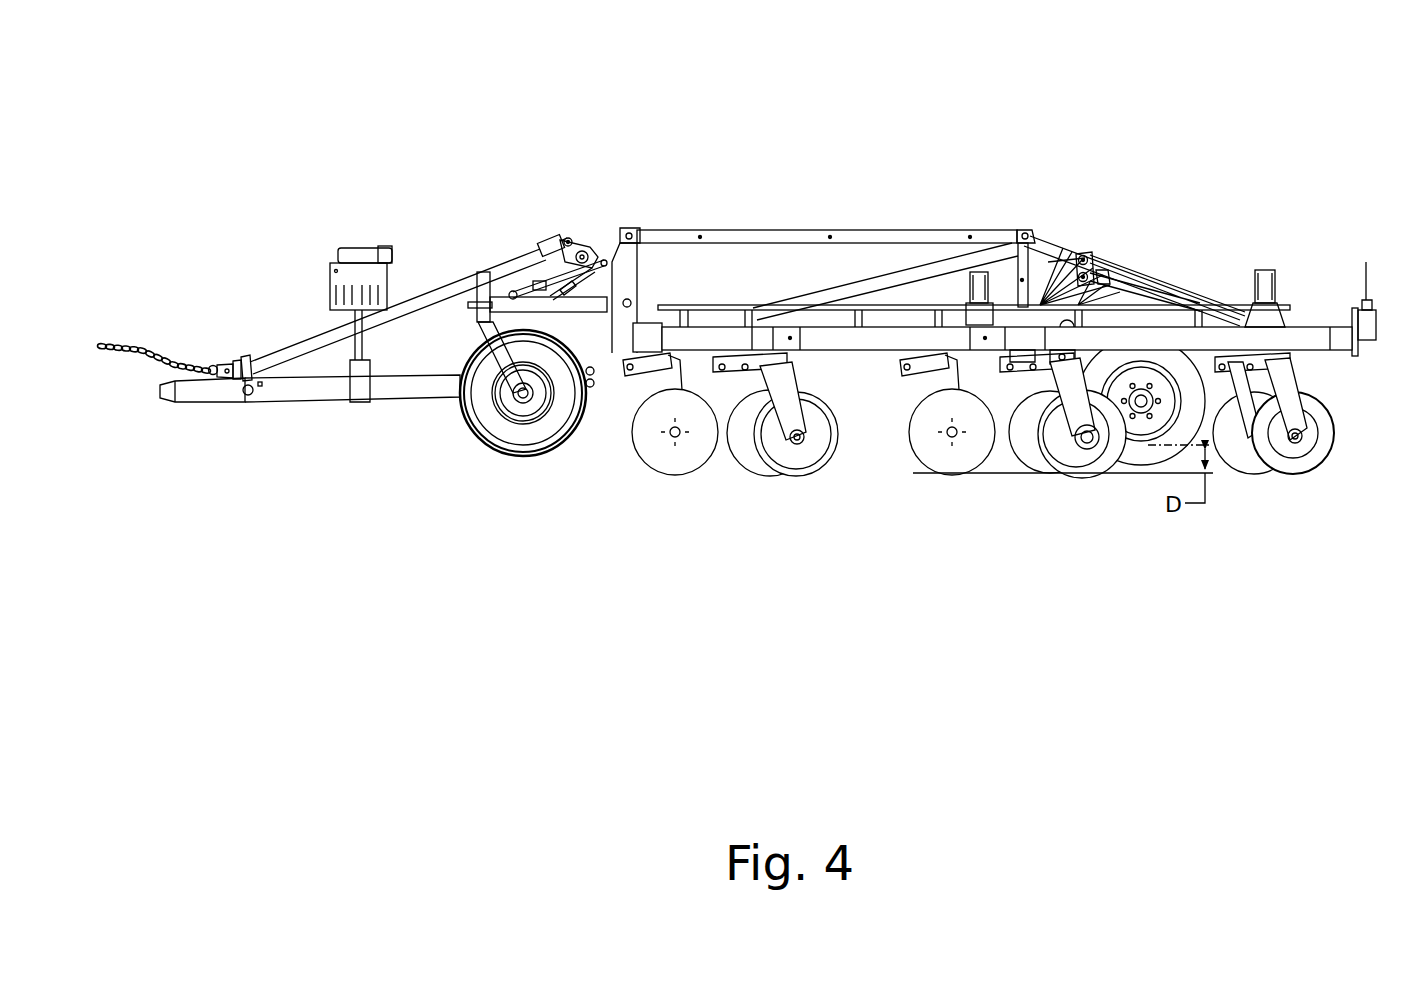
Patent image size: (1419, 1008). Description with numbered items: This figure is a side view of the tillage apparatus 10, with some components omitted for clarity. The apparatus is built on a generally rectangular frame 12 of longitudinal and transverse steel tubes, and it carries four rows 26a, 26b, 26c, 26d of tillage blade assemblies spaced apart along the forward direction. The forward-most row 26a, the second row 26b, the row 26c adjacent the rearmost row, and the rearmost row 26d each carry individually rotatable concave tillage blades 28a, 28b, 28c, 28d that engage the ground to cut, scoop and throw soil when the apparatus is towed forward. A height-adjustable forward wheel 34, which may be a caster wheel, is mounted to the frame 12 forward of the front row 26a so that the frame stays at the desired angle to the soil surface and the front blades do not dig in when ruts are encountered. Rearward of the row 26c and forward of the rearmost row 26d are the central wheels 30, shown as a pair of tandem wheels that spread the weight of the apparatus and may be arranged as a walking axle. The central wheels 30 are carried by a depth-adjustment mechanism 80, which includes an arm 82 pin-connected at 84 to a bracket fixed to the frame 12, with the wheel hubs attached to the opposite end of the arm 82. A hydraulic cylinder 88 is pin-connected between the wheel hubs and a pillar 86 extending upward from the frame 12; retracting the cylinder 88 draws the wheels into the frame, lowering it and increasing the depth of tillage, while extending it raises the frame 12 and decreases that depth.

The tillage apparatus 10 is at (407, 155).
The frame 12 is at (867, 352).
The forward-most row of tillage blade assemblies 26a is at (626, 477).
The second row of tillage blade assemblies 26b is at (801, 477).
The row of tillage blade assemblies adjacent the rearmost row 26c is at (1009, 477).
The rearmost row of tillage blade assemblies 26d is at (1302, 474).
The concave tillage blade 28a is at (633, 450).
The concave tillage blade 28b is at (808, 472).
The concave tillage blade 28c is at (980, 460).
The concave tillage blade 28d is at (1312, 473).
The central wheels 30 is at (1140, 468).
The forward wheel 34 is at (508, 457).
The depth-adjustment mechanism 80 is at (1058, 277).
The arm 82 is at (1060, 353).
The pin connection 84 is at (1023, 353).
The pillar 86 is at (1088, 272).
The hydraulic cylinder 88 is at (1072, 290).